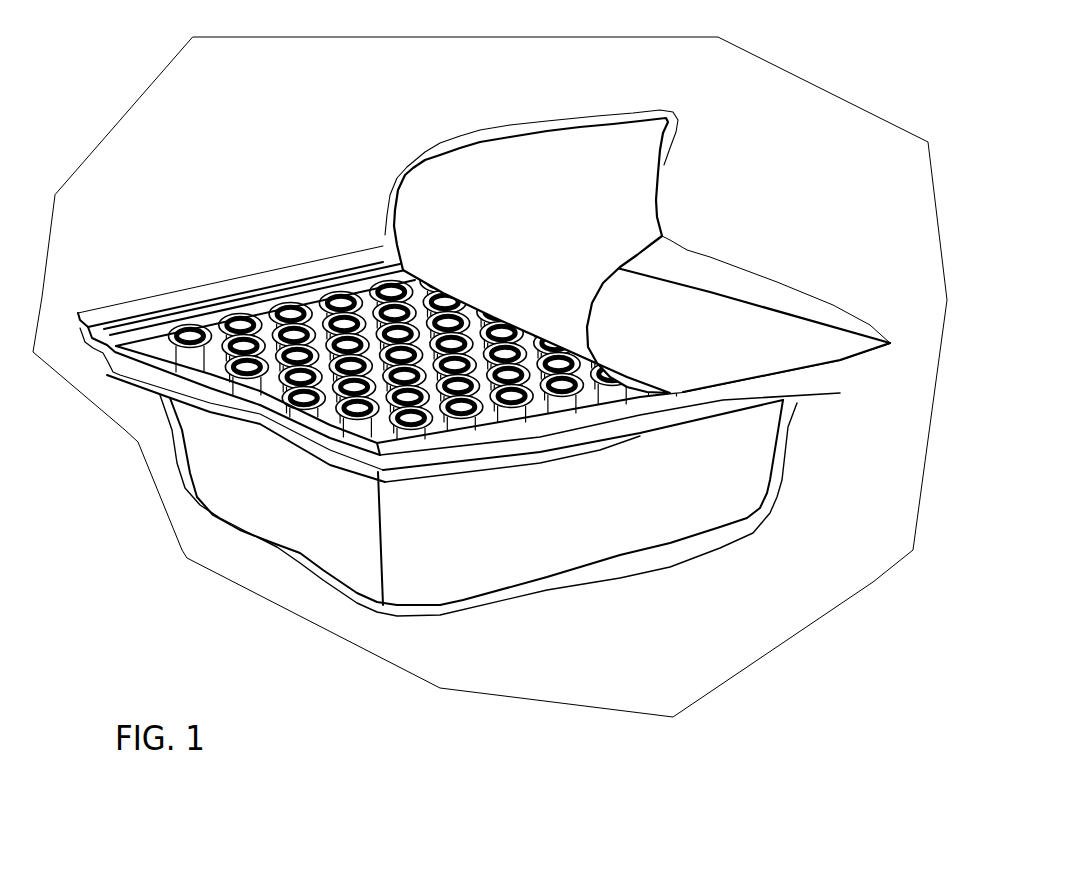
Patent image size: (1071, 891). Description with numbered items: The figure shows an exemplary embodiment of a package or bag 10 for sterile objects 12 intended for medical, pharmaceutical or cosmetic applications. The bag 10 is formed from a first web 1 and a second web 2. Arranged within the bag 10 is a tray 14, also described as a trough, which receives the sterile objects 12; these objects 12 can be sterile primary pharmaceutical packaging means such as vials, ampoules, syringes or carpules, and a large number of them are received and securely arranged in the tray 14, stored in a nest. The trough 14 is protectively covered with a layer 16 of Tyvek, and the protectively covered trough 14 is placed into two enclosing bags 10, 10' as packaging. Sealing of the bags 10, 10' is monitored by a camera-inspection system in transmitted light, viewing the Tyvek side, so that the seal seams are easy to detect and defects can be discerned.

The enclosing bag 10' is at (490, 370).
The bag 10 is at (494, 377).
The first web 1 is at (655, 173).
The layer of Tyvek 16 is at (523, 167).
The sterile objects 12 is at (407, 287).
The tray 14 is at (810, 386).
The second web 2 is at (598, 590).